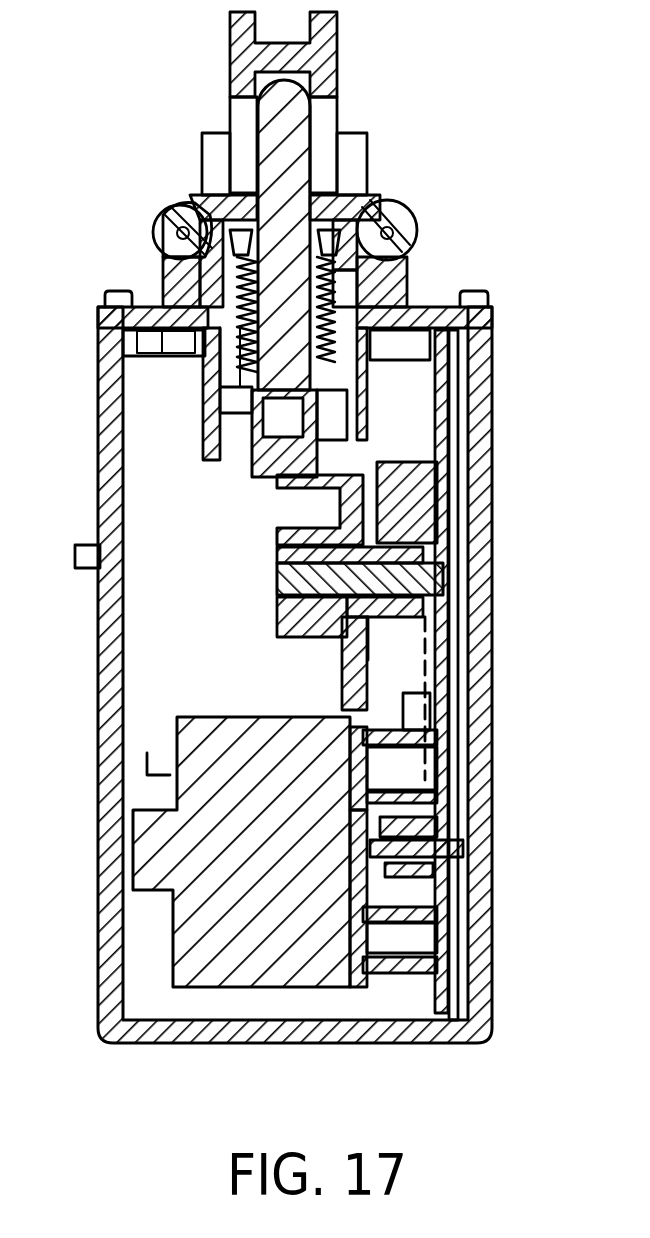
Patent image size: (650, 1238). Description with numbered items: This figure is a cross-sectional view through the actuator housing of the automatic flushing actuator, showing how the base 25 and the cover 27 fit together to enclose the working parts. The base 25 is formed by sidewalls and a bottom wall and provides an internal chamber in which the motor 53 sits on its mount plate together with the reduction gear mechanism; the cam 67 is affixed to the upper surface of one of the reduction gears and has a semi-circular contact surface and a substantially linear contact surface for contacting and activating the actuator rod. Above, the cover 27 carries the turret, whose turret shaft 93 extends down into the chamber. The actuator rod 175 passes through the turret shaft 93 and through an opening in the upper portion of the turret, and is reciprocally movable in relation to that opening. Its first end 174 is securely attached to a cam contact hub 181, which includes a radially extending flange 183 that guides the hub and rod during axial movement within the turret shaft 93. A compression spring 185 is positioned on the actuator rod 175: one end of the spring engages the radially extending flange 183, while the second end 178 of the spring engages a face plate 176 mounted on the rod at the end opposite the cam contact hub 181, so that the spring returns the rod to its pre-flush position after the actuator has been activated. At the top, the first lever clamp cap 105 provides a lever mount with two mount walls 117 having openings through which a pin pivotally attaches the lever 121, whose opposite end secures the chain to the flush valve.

The base 25 is at (516, 707).
The cover 27 is at (443, 292).
The motor 53 is at (203, 912).
The cam 67 is at (277, 533).
The turret shaft 93 is at (368, 393).
The first lever clamp cap 105 is at (410, 223).
The mount walls 117 is at (347, 133).
The lever 121 is at (327, 62).
The first end of the actuator rod 174 is at (280, 407).
The actuator rod 175 is at (255, 128).
The face plate 176 is at (322, 360).
The second end of the spring 178 is at (233, 280).
The cam contact hub 181 is at (257, 478).
The radially extending flange 183 is at (207, 383).
The compression spring 185 is at (243, 303).